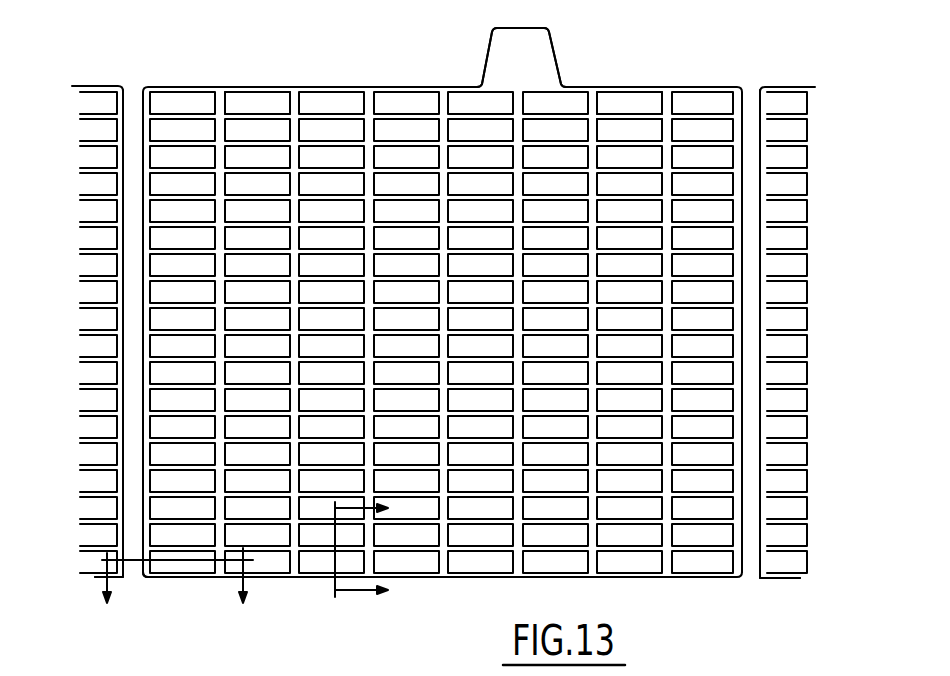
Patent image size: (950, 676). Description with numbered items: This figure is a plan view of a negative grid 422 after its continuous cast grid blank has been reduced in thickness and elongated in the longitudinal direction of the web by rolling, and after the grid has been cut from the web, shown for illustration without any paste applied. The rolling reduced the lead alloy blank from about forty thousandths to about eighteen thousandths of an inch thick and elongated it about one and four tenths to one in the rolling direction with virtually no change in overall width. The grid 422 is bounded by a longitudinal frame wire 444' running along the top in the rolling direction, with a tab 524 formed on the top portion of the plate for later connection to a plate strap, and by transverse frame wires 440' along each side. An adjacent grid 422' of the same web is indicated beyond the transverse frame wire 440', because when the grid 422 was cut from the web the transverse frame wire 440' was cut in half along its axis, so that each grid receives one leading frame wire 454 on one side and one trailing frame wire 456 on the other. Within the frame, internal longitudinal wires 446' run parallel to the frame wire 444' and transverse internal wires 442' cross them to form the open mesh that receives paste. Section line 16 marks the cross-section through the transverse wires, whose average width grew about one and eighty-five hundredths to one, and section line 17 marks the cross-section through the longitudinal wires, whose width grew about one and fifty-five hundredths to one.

The negative grid 422 is at (378, 295).
The negative grid 422' is at (825, 304).
The transverse frame wire 440' is at (443, 304).
The transverse internal wire 442' is at (274, 81).
The longitudinal frame wire 444' is at (442, 302).
The internal longitudinal wire 446' is at (629, 95).
The tab 524 is at (552, 45).
The leading frame wire 454 is at (113, 532).
The trailing frame wire 456 is at (141, 577).
The section line 16- 16 is at (177, 598).
The section line 17- 17 is at (378, 556).